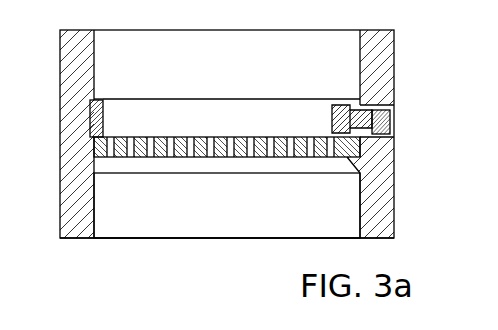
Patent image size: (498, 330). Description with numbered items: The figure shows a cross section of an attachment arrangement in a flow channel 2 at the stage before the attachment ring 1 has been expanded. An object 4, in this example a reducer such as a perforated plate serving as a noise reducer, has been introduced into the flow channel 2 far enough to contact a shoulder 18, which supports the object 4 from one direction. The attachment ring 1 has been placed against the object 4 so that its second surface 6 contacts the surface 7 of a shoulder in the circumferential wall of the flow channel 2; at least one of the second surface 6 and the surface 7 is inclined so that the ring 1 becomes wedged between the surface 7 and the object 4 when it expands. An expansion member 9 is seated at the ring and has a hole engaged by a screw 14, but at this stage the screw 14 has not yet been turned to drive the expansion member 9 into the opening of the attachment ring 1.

The attachment ring 1 is at (171, 98).
The flow channel 2 is at (168, 238).
The object 4 is at (215, 157).
The second surface 6 is at (103, 103).
The surface of a shoulder 7 is at (94, 100).
The expansion member 9 is at (332, 108).
The screw 14 is at (387, 108).
The shoulder 18 is at (98, 174).